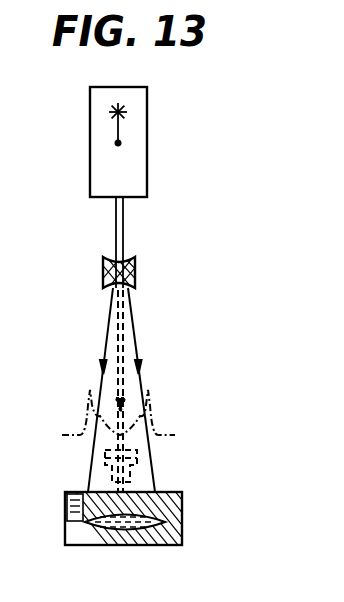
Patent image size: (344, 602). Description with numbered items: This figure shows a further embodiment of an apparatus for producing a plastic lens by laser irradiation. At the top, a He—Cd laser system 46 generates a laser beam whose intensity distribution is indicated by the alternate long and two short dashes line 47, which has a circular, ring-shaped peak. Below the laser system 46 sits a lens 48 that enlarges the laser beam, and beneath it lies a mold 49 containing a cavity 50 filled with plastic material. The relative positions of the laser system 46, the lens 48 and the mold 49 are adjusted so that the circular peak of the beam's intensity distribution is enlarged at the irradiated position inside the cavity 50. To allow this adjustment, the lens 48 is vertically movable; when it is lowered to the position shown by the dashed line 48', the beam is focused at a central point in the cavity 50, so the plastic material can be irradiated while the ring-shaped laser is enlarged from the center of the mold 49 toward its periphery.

The He—Cd laser system 46 is at (143, 141).
The alternate long and two short dashes line 47 is at (153, 410).
The lens 48 is at (151, 272).
The dashed line 48' is at (161, 458).
The mold 49 is at (182, 521).
The cavity 50 is at (147, 527).